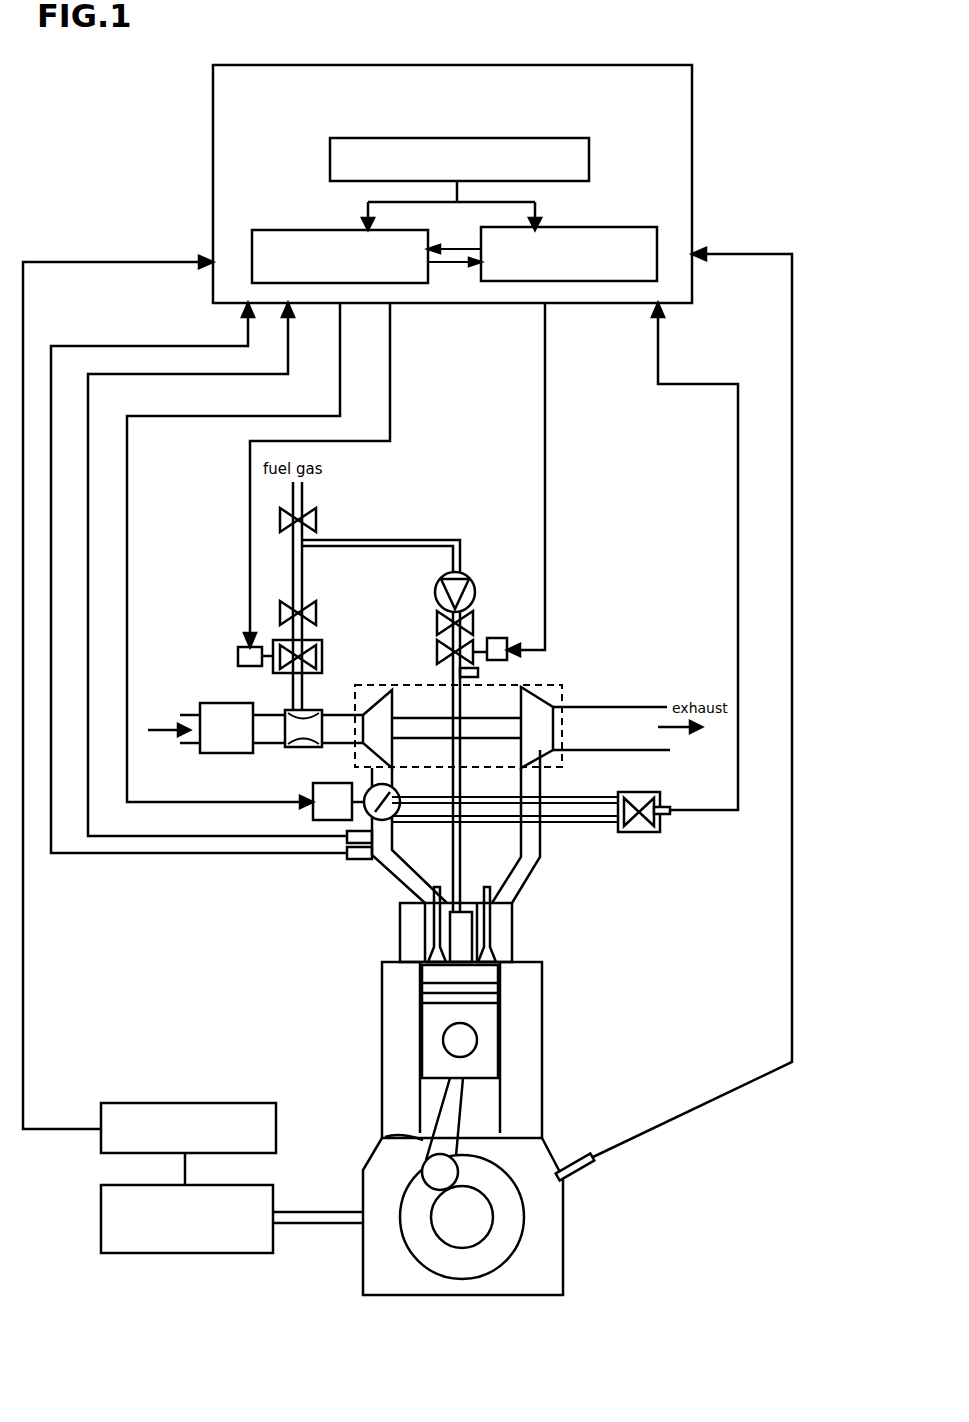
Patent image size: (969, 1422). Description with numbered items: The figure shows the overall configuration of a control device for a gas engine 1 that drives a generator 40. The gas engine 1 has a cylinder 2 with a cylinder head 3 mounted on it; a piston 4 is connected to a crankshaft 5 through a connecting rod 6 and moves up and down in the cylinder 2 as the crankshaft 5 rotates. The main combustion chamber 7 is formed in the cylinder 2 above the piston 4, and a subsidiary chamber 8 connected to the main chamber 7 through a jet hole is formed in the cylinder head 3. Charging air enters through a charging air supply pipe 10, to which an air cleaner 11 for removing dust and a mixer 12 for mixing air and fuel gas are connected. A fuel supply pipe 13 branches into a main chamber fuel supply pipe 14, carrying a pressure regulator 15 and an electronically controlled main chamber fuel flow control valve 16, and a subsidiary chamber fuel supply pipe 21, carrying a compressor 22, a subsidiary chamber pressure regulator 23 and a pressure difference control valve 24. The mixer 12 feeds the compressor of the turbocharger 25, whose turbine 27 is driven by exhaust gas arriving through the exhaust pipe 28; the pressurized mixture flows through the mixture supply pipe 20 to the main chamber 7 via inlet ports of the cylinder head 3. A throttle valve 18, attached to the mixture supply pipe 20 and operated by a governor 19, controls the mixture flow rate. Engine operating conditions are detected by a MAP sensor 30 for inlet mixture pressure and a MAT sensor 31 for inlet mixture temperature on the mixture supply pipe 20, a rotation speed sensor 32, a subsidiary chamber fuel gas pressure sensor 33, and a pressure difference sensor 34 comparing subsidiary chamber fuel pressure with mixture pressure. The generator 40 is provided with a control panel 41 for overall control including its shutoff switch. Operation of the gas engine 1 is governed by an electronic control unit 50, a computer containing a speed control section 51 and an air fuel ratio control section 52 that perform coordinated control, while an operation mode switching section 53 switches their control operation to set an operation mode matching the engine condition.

The gas engine 1 is at (563, 1270).
The cylinder 2 is at (500, 1020).
The cylinder head 3 is at (512, 945).
The piston 4 is at (483, 1062).
The crankshaft 5 is at (477, 1222).
The connecting rod 6 is at (382, 1136).
The main combustion chamber 7 is at (425, 975).
The subsidiary chamber 8 is at (465, 925).
The charging air supply pipe 10 is at (200, 713).
The air cleaner 11 is at (216, 703).
The mixer 12 is at (300, 748).
The fuel supply pipe 13 is at (303, 510).
The main chamber fuel supply pipe 14 is at (304, 585).
The pressure regulator 15 is at (312, 612).
The main chamber fuel flow control valve 16 is at (322, 652).
The throttle valve 18 is at (400, 800).
The governor 19 is at (313, 816).
The mixture supply pipe 20 is at (395, 875).
The subsidiary chamber fuel supply pipe 21 is at (410, 540).
The compressor 22 is at (475, 590).
The subsidiary chamber pressure regulator 23 is at (436, 621).
The pressure difference control valve 24 is at (436, 650).
The turbocharger 25 is at (481, 788).
The turbine 27 is at (521, 703).
The exhaust pipe 28 is at (393, 700).
The MAP sensor 30 is at (340, 845).
The MAT sensor 31 is at (348, 859).
The rotation speed sensor 32 is at (588, 1172).
The subsidiary chamber fuel gas pressure sensor 33 is at (478, 672).
The pressure difference sensor 34 is at (670, 803).
The generator 40 is at (135, 1253).
The control panel 41 is at (140, 1103).
The electronic control unit 50 is at (692, 98).
The speed control section 51 is at (252, 245).
The air fuel ratio control section 52 is at (657, 244).
The operation mode switching section 53 is at (589, 155).